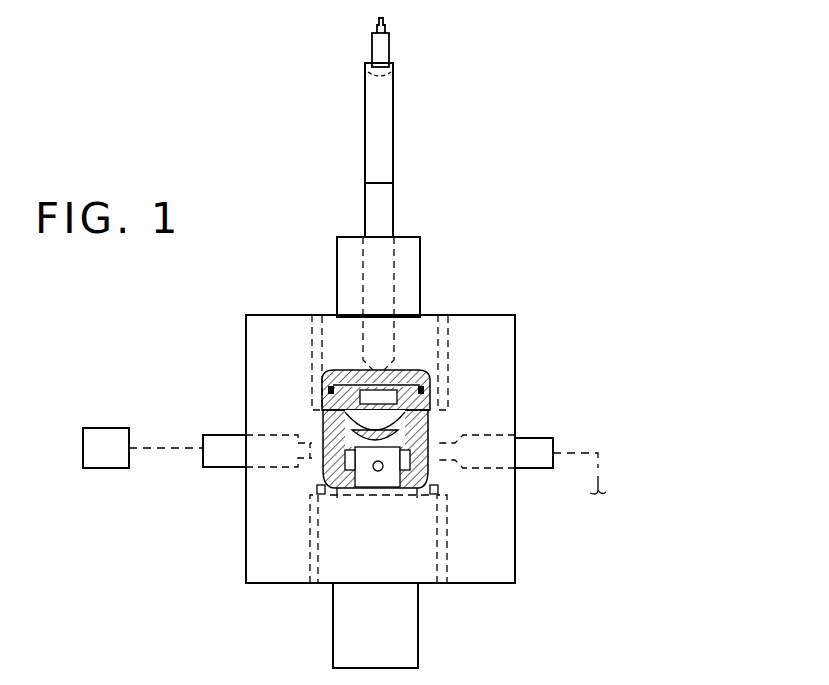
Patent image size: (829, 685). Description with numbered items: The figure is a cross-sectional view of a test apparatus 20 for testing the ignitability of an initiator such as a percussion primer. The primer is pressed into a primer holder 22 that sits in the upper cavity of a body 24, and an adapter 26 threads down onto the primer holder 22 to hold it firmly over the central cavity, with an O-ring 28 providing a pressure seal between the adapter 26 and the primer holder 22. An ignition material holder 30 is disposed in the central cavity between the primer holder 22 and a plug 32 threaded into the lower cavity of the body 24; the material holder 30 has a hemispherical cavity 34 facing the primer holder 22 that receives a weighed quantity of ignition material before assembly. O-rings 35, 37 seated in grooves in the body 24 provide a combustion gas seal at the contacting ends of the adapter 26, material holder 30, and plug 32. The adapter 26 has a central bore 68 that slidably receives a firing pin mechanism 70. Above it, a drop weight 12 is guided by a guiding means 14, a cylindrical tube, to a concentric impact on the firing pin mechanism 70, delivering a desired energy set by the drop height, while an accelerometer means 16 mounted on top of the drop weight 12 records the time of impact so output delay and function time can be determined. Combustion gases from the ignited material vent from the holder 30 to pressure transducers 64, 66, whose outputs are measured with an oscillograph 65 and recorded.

The drop weight 12 is at (392, 54).
The guiding means 14 is at (394, 116).
The accelerometer means 16 is at (390, 30).
The test apparatus 20 is at (572, 328).
The primer holder 22 is at (440, 401).
The body 24 is at (516, 557).
The adapter 26 is at (325, 315).
The O-ring 28 is at (472, 371).
The ignition material holder 30 is at (426, 418).
The plug 32 is at (425, 586).
The hemispherical cavity 34 is at (345, 418).
The O-ring 35 is at (324, 410).
The O-ring 37 is at (440, 490).
The pressure transducer 64 is at (216, 470).
The oscillograph 65 is at (98, 470).
The pressure transducer 66 is at (545, 470).
The central bore 68 is at (388, 268).
The firing pin mechanism 70 is at (394, 210).